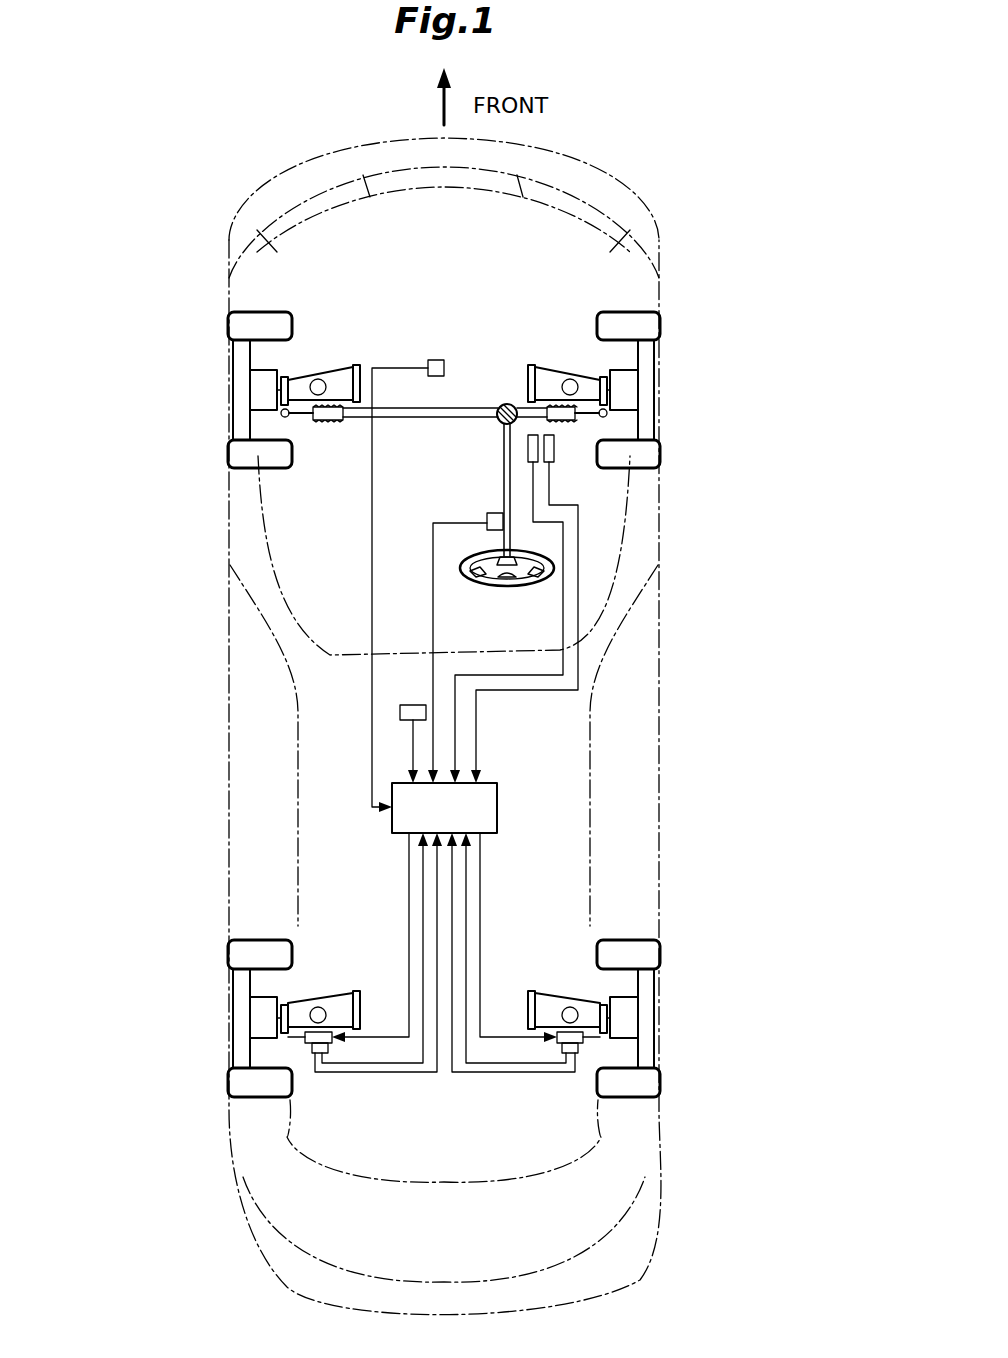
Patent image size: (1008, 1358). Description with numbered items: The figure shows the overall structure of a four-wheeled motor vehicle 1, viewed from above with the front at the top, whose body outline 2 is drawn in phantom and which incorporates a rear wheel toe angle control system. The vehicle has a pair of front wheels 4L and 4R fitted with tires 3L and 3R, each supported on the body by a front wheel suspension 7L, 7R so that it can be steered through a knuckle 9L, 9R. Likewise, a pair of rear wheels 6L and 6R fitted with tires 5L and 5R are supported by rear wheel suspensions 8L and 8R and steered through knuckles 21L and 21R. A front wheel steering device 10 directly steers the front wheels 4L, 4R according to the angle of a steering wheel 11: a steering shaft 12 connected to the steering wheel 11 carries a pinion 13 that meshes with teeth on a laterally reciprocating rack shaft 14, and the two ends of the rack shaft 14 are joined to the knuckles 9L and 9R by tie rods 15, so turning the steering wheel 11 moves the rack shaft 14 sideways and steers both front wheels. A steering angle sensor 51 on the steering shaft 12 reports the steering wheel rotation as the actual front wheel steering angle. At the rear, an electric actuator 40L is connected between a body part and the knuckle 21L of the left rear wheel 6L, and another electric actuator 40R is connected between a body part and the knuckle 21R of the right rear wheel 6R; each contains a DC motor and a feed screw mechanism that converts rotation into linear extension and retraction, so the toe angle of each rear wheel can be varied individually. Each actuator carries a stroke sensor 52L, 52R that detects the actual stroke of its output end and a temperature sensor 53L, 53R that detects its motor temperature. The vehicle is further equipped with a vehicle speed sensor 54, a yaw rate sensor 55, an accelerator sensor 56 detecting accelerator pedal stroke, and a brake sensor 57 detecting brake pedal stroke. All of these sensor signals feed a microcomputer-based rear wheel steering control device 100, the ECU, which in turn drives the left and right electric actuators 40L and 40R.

The four-wheeled motor vehicle 1 is at (668, 142).
The vehicle body 2 is at (659, 262).
The tire 3L is at (245, 462).
The tire 3R is at (645, 462).
The front wheel 4L is at (233, 353).
The front wheel 4R is at (654, 353).
The tire 5L is at (238, 1090).
The tire 5R is at (652, 1090).
The rear wheel 6L is at (233, 1000).
The rear wheel 6R is at (654, 1000).
The front wheel suspension 7L is at (350, 367).
The front wheel suspension 7R is at (545, 367).
The rear wheel suspension 8L is at (330, 995).
The rear wheel suspension 8R is at (548, 995).
The knuckle 9L is at (287, 375).
The knuckle 9R is at (603, 375).
The front wheel steering device 10 is at (588, 556).
The steering wheel 11 is at (507, 587).
The steering shaft 12 is at (503, 480).
The pinion 13 is at (507, 403).
The rack shaft 14 is at (470, 406).
The tie rods 15 is at (283, 415).
The knuckle 21L is at (287, 1003).
The knuckle 21R is at (603, 1003).
The electric actuator 40L is at (305, 1040).
The electric actuator 40R is at (583, 1040).
The steering angle sensor 51 is at (489, 518).
The stroke sensor 52L is at (313, 1056).
The stroke sensor 52R is at (573, 1056).
The temperature sensor 53L is at (320, 1054).
The temperature sensor 53R is at (570, 1054).
The vehicle speed sensor 54 is at (436, 359).
The yaw rate sensor 55 is at (410, 704).
The accelerator sensor 56 is at (555, 450).
The brake sensor 57 is at (528, 450).
The rear wheel steering control device 100 is at (498, 814).